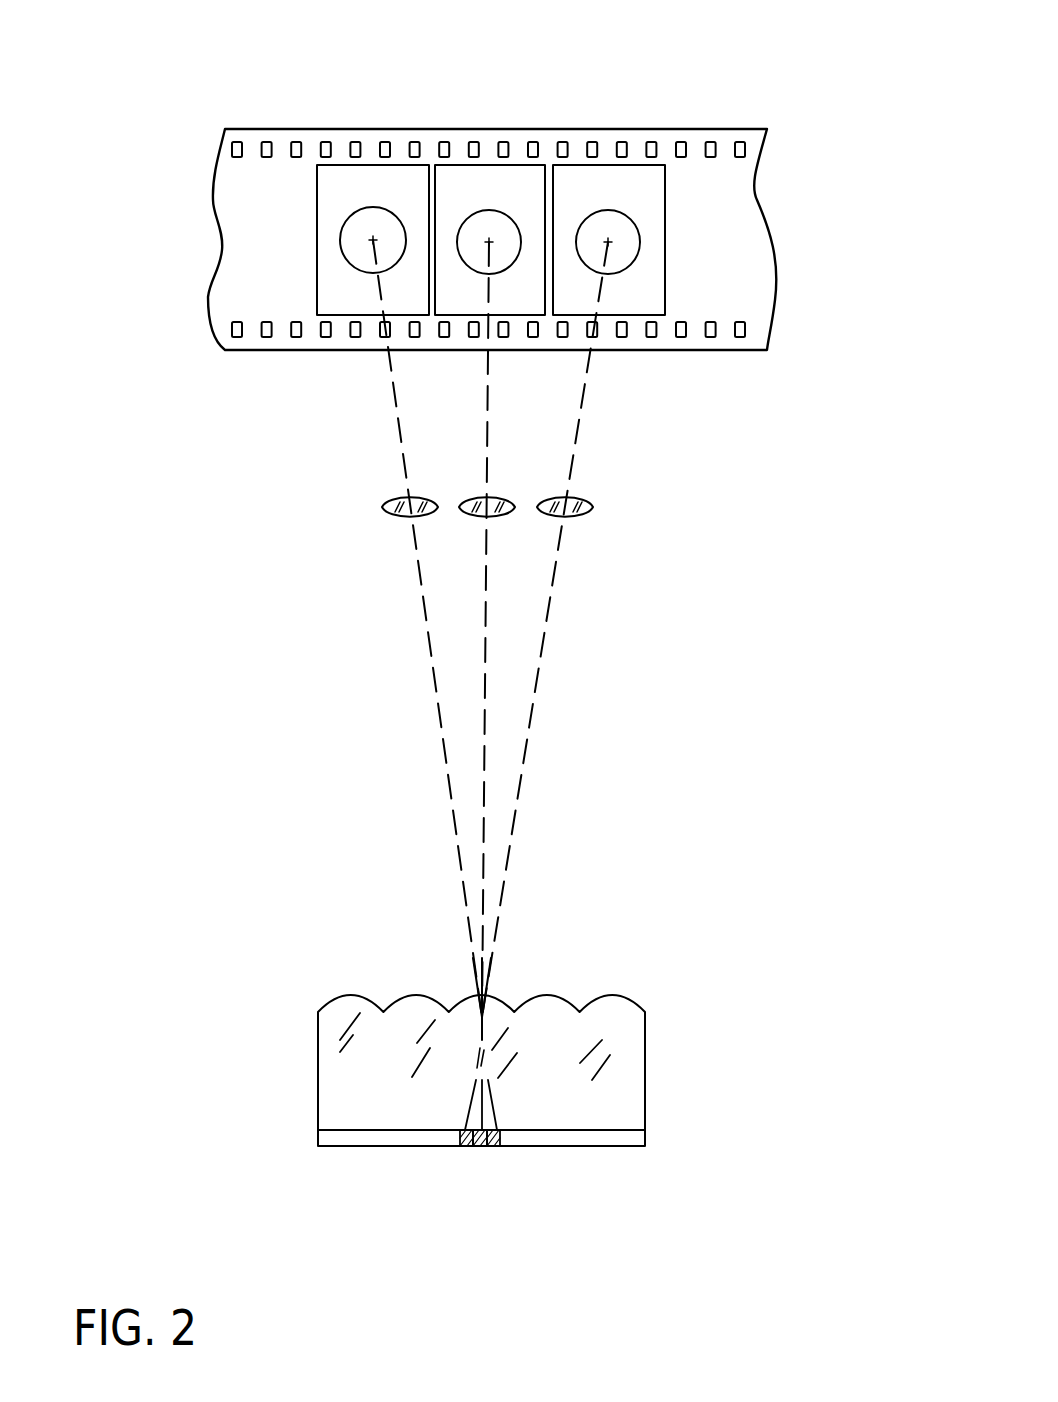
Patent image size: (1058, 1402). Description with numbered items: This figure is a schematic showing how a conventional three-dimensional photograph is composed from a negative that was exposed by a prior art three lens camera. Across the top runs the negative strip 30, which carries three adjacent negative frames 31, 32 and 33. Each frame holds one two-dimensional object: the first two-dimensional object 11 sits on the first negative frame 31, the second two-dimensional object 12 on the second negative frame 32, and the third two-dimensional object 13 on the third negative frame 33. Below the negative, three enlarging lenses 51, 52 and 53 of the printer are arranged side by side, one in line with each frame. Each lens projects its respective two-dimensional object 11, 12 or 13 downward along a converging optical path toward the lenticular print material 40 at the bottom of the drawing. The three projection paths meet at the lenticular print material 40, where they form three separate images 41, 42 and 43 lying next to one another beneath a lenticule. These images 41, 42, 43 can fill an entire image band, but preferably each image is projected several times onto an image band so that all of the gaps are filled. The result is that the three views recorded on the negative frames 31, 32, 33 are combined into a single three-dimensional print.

The 2-D object 11 is at (355, 260).
The 2-D object 12 is at (475, 220).
The 2-D object 13 is at (635, 245).
The film strip 30 is at (492, 239).
The negative frame 31 is at (405, 170).
The negative frame 32 is at (523, 172).
The negative frame 33 is at (637, 172).
The lenticular print material 40 is at (640, 1105).
The image 41 is at (492, 1147).
The image 42 is at (482, 1147).
The image 43 is at (462, 1147).
The enlarging lens 51 is at (400, 520).
The enlarging lens 52 is at (512, 500).
The enlarging lens 53 is at (575, 520).